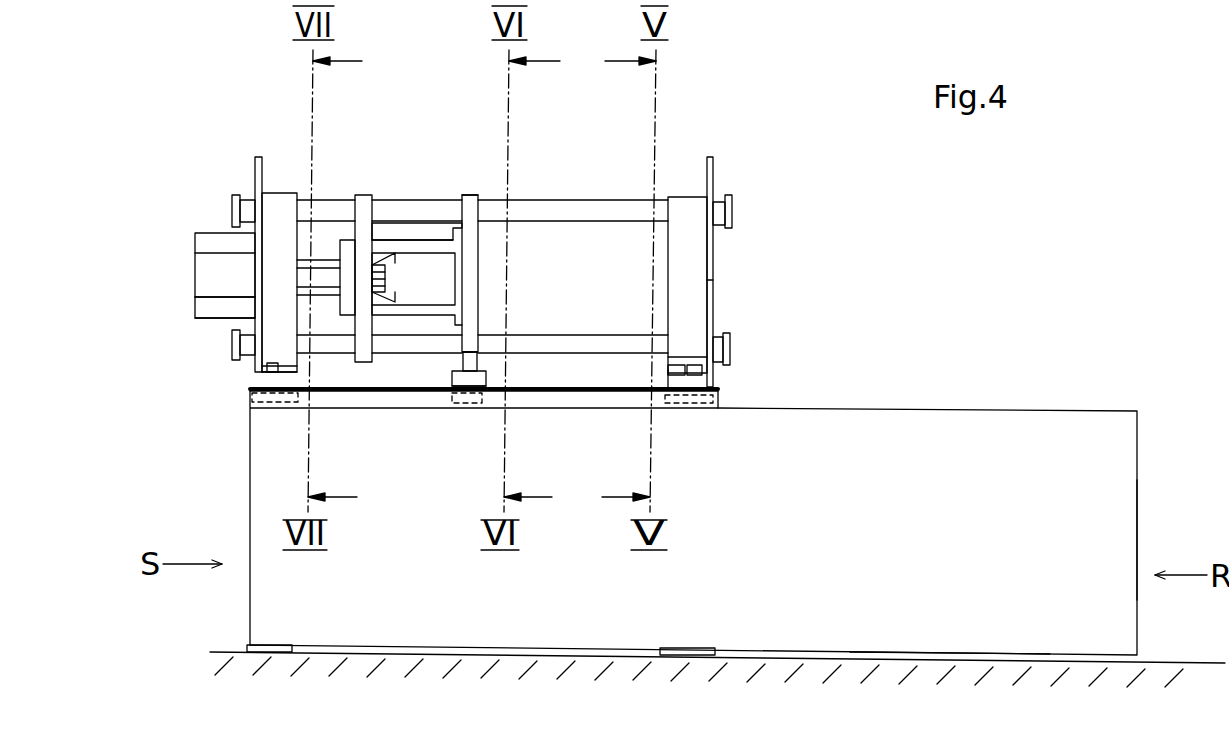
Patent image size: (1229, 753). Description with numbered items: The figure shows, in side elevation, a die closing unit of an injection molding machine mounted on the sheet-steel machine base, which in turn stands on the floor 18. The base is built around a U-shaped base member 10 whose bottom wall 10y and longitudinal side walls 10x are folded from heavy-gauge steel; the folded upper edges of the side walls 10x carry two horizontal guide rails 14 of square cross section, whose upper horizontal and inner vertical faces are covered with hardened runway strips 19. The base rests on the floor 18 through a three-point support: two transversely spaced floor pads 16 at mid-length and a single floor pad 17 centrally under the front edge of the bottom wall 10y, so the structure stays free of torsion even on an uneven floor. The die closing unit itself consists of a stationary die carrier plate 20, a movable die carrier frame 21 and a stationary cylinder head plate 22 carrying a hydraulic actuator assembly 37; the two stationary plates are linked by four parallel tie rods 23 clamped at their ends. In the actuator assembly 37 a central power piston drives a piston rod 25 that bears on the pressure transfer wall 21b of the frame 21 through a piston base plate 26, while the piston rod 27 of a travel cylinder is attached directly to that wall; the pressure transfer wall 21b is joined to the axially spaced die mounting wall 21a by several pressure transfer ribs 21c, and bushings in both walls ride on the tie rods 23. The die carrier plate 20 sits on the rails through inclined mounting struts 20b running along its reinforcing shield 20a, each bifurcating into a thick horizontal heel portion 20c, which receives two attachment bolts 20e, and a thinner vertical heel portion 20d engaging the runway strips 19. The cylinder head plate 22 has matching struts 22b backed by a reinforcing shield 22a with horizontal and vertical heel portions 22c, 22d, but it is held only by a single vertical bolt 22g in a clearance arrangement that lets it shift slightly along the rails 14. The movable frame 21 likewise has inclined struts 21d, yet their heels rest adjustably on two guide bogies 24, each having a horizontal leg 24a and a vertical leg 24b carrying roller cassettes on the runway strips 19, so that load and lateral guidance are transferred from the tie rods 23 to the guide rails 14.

The base member 10 is at (945, 405).
The side walls 10x is at (1108, 532).
The bottom wall 10y is at (948, 656).
The guide rails 14 is at (582, 395).
The floor pads 16 is at (685, 655).
The floor pad 17 is at (267, 652).
The floor 18 is at (1157, 658).
The runway strips 19 is at (613, 393).
The stationary die carrier plate 20 is at (690, 190).
The reinforcing shield 20a is at (712, 290).
The inclined mounting struts 20b is at (698, 357).
The horizontal heel portion 20c is at (700, 383).
The vertical heel portion 20d is at (688, 403).
The attachment bolts 20e is at (668, 370).
The movable die carrier frame 21 is at (487, 272).
The die mounting wall 21a is at (472, 198).
The pressure transfer wall 21b is at (365, 243).
The pressure transfer ribs 21c is at (437, 247).
The inclined struts 21d is at (472, 360).
The stationary cylinder head plate 22 is at (280, 188).
The reinforcing shield 22a is at (233, 300).
The inclined mounting struts 22b is at (282, 395).
The horizontal heel portion 22c is at (265, 378).
The vertical heel portion 22d is at (270, 402).
The vertical bolt 22g is at (268, 366).
The tie rods 23 is at (603, 212).
The guide bogies 24 is at (447, 377).
The horizontal leg 24a is at (484, 376).
The vertical leg 24b is at (470, 404).
The piston rod 25 is at (313, 258).
The piston base plate 26 is at (342, 250).
The piston rod 27 is at (313, 275).
The hydraulic actuator assembly 37 is at (210, 268).